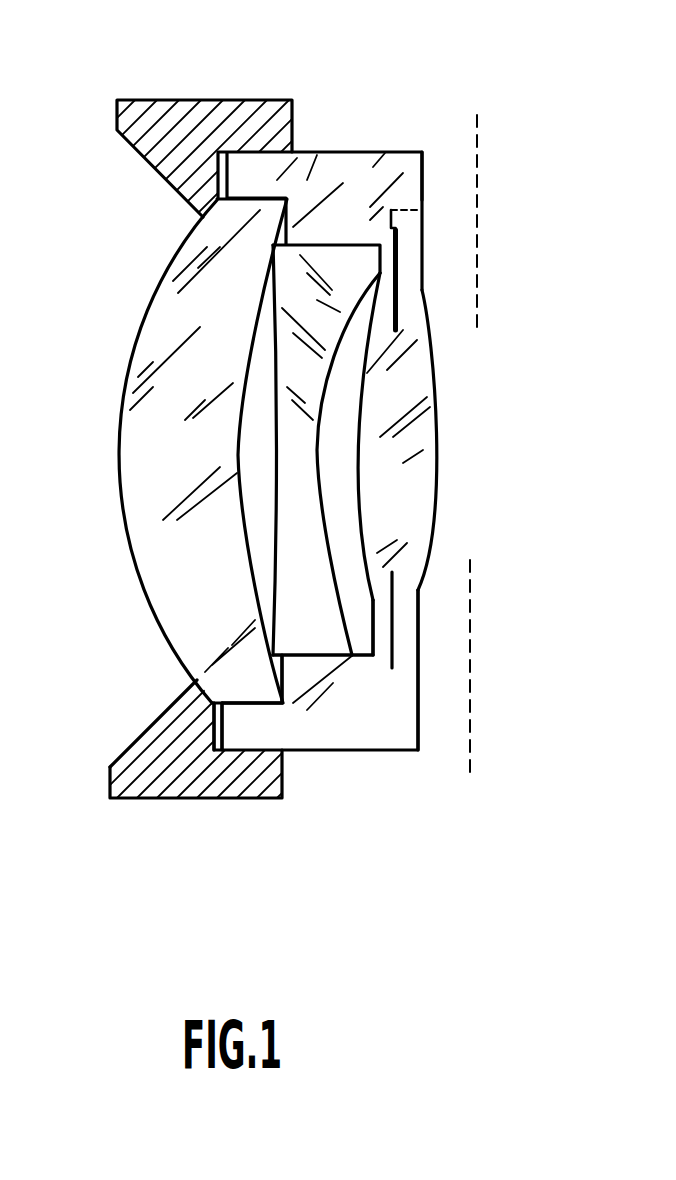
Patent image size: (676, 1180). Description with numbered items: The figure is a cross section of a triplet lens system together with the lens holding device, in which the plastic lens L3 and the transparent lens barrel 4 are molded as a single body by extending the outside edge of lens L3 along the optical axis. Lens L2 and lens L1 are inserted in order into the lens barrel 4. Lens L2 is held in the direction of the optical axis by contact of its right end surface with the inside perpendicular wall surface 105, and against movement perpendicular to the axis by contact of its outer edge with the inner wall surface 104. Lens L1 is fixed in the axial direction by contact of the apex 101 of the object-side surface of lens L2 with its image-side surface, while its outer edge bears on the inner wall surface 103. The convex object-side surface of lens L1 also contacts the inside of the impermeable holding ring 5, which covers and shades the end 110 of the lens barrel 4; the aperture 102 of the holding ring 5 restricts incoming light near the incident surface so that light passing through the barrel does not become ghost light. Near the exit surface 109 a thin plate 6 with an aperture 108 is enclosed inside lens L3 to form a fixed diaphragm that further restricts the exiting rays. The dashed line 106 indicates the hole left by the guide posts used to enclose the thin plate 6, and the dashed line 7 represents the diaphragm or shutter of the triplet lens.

The lens barrel 4 is at (335, 152).
The holding ring 5 is at (178, 99).
The thin plate 6 is at (403, 259).
The diaphragm or shutter 7 is at (479, 137).
The lens L1 is at (157, 293).
The lens L2 is at (266, 316).
The plastic lens L3 is at (436, 418).
The apex 101 is at (262, 632).
The aperture 102 is at (197, 682).
The inner wall surface 103 is at (258, 703).
The inner wall surface 104 is at (352, 655).
The inside perpendicular wall surface 105 is at (372, 653).
The hole 106 is at (421, 174).
The aperture 108 is at (393, 582).
The exit surface 109 is at (418, 672).
The end 110 is at (223, 718).